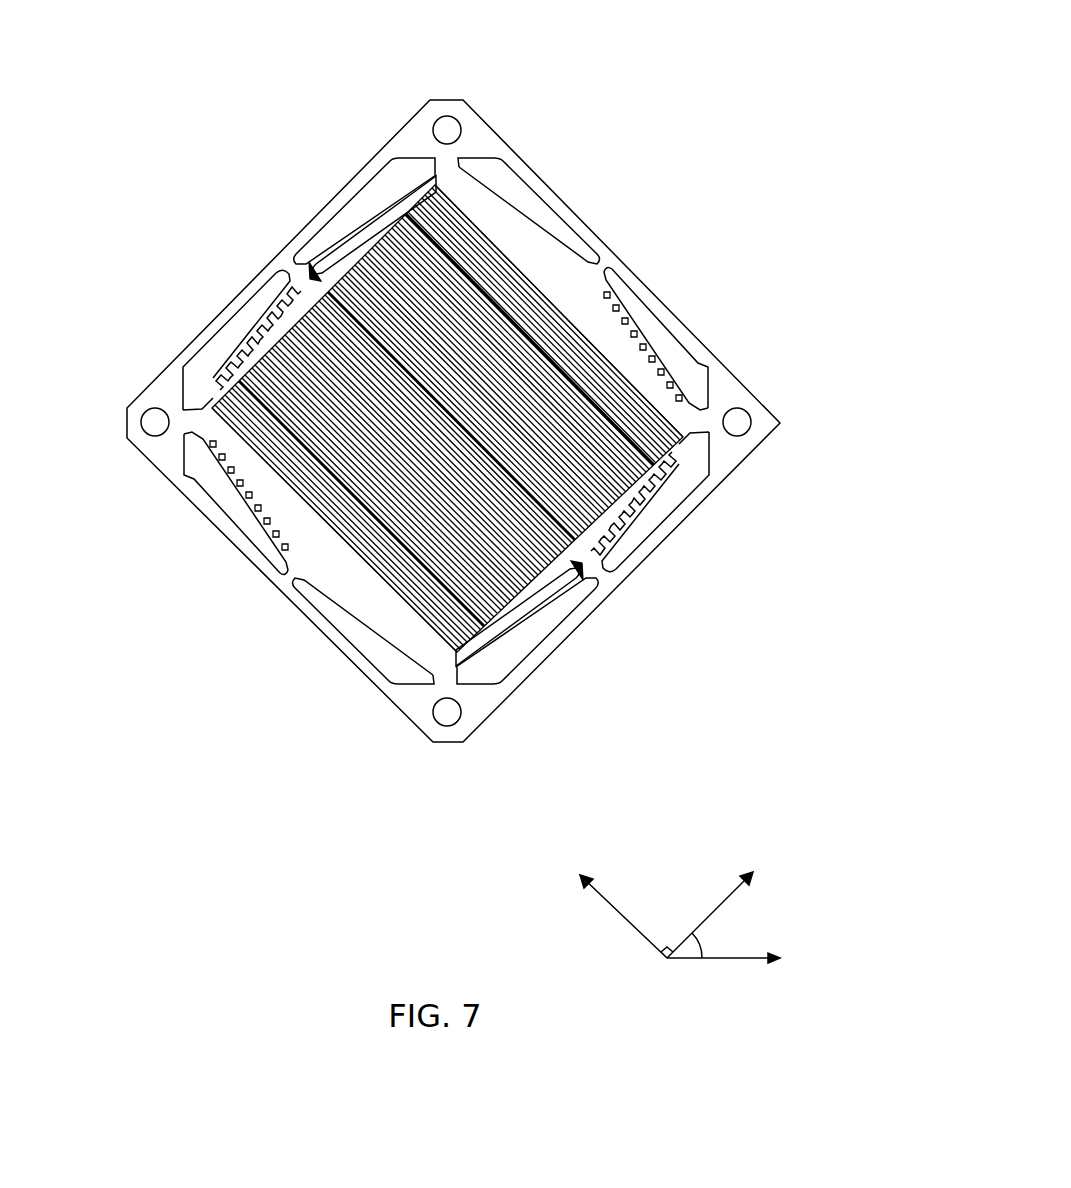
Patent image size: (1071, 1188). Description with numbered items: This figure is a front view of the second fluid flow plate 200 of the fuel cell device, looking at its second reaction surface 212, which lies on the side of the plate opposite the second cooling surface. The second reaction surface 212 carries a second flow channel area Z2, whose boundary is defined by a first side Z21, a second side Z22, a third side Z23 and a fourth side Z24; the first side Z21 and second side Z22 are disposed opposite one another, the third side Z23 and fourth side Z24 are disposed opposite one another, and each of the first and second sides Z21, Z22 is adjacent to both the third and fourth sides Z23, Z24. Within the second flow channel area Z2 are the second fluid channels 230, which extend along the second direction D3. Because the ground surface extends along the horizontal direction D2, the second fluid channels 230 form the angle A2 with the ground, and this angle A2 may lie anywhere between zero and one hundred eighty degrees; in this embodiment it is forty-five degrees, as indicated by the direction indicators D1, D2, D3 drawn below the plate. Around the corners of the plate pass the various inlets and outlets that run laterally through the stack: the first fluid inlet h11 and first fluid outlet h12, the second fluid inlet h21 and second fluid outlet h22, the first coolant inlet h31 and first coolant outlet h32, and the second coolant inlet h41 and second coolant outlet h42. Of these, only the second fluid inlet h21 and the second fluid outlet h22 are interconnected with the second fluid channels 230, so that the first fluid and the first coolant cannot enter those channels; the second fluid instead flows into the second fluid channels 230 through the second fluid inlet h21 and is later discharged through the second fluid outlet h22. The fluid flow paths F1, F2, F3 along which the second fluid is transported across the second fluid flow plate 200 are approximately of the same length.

The second fluid flow plate 200 is at (779, 27).
The second reaction surface 212 is at (160, 450).
The second fluid channels 230 is at (547, 310).
The first fluid inlet h11 is at (518, 198).
The first fluid outlet h12 is at (373, 643).
The second fluid inlet h21 is at (373, 200).
The second fluid outlet h22 is at (510, 647).
The first coolant inlet h31 is at (233, 510).
The first coolant outlet h32 is at (687, 373).
The second coolant inlet h41 is at (680, 477).
The second coolant outlet h42 is at (207, 373).
The second flow channel area Z2 is at (300, 258).
The first side Z21 is at (303, 270).
The second side Z22 is at (583, 573).
The third side Z23 is at (587, 343).
The fourth side Z24 is at (340, 533).
The fluid flow path F1 is at (258, 322).
The fluid flow path F2 is at (558, 567).
The fluid flow path F3 is at (640, 545).
The first direction D1 is at (727, 901).
The horizontal direction D2 is at (742, 961).
The second direction D3 is at (614, 901).
The angle A2 is at (715, 942).